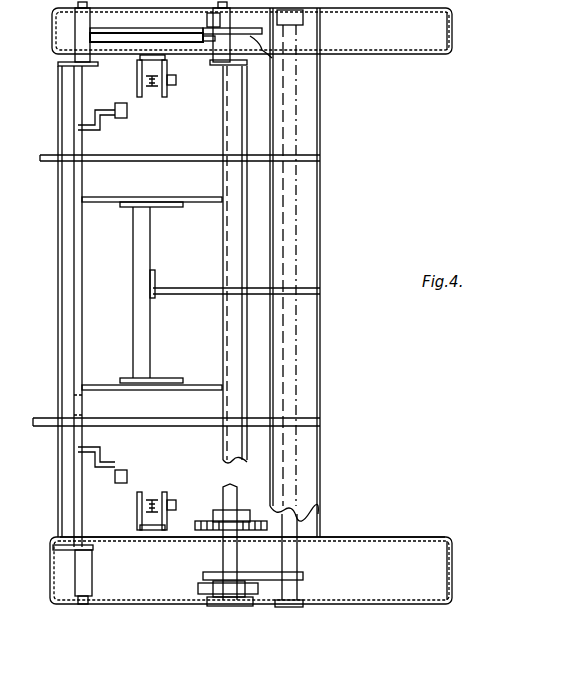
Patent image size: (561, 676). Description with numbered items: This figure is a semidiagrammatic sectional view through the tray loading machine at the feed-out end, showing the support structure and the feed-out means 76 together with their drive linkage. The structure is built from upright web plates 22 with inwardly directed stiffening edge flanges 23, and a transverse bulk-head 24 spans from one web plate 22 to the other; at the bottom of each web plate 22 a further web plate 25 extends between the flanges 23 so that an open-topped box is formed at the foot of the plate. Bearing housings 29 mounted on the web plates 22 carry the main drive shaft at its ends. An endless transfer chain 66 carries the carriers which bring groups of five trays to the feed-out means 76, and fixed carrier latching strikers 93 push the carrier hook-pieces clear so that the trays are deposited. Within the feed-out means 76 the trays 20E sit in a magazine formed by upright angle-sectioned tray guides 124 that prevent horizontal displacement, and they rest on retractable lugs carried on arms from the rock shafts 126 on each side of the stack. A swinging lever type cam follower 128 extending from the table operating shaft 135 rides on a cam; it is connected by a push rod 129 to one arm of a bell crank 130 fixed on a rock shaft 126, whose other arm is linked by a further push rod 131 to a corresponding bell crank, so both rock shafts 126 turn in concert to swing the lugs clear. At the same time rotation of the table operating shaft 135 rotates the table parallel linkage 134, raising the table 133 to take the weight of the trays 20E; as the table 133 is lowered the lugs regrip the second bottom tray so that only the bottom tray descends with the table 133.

The web plate 22 is at (430, 8).
The edge flange 23 is at (451, 38).
The bulk-head 24 is at (320, 222).
The further web plate 25 is at (378, 537).
The bearing housing 29 is at (202, 594).
The transfer chain 66 is at (154, 90).
The feed-out means 76 is at (97, 334).
The carrier latching striker 93 is at (120, 104).
The trays 20E is at (192, 132).
The tray guide 124 is at (225, 142).
The rock shaft 126 is at (60, 296).
The cam follower 128 is at (262, 25).
The push rod 129 is at (272, 58).
The bell crank 130 is at (220, 62).
The further push rod 131 is at (158, 22).
The table 133 is at (140, 245).
The table parallel linkage 134 is at (203, 292).
The table operating shaft 135 is at (302, 520).